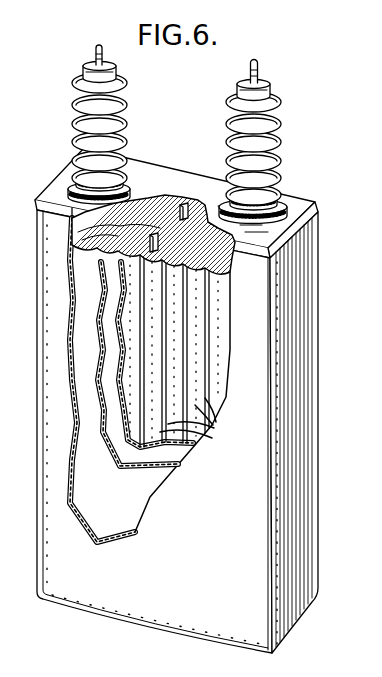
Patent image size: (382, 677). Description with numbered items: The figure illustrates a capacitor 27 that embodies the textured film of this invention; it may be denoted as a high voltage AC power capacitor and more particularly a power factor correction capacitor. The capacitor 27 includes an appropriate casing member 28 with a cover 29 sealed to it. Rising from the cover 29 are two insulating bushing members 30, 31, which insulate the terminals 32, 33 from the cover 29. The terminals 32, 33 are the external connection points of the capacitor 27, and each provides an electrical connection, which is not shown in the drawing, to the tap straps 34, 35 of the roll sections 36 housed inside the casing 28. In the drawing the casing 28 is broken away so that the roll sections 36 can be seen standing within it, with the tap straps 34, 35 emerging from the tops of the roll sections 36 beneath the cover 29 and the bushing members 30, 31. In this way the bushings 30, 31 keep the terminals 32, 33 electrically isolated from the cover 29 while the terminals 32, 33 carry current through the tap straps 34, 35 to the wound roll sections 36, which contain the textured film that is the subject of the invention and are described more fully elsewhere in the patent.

The capacitor 27 is at (191, 111).
The casing member 28 is at (302, 353).
The cover 29 is at (54, 198).
The insulating bushing member 30 is at (73, 107).
The insulating bushing member 31 is at (279, 127).
The terminal 32 is at (94, 49).
The terminal 33 is at (258, 67).
The tap strap 34 is at (151, 233).
The tap strap 35 is at (184, 203).
The roll sections 36 is at (214, 433).